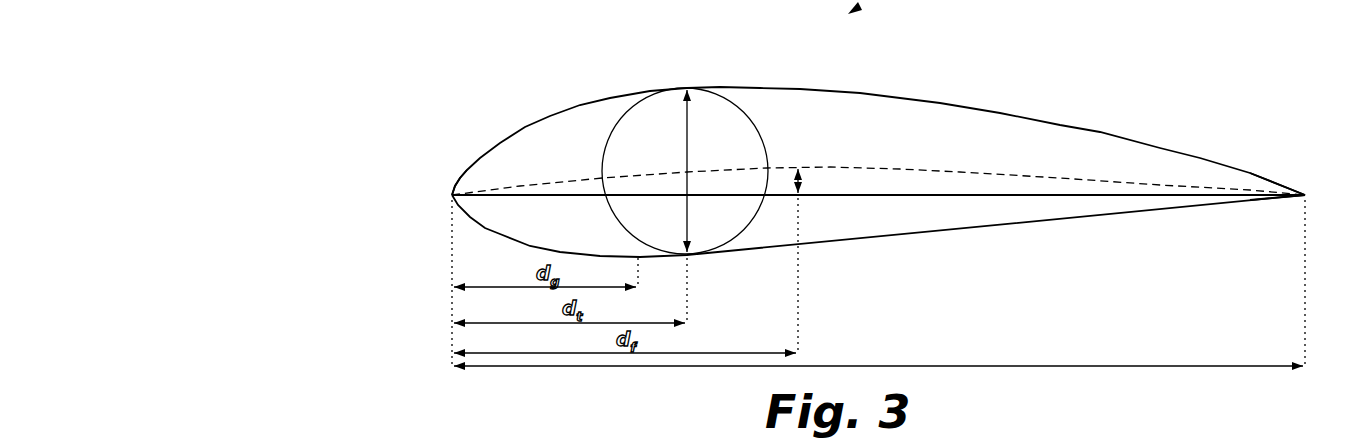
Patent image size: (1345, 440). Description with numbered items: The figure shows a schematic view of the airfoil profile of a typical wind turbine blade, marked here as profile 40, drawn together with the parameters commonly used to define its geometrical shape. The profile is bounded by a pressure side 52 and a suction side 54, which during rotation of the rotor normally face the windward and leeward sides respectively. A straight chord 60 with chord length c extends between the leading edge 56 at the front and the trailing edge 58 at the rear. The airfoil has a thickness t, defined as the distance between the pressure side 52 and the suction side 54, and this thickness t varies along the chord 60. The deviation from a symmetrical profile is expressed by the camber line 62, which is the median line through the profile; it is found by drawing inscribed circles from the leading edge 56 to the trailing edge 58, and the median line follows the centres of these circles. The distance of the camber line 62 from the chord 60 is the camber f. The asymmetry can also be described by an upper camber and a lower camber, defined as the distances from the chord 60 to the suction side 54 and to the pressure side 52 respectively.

The airfoil 40 is at (306, 439).
The pressure side 52 is at (1048, 224).
The suction side 54 is at (986, 106).
The leading edge 56 is at (445, 190).
The trailing edge 58 is at (1305, 192).
The chord 60 is at (1088, 195).
The camber line 62 is at (876, 168).
The thickness t is at (692, 143).
The camber f is at (808, 178).
The chord length c is at (878, 353).